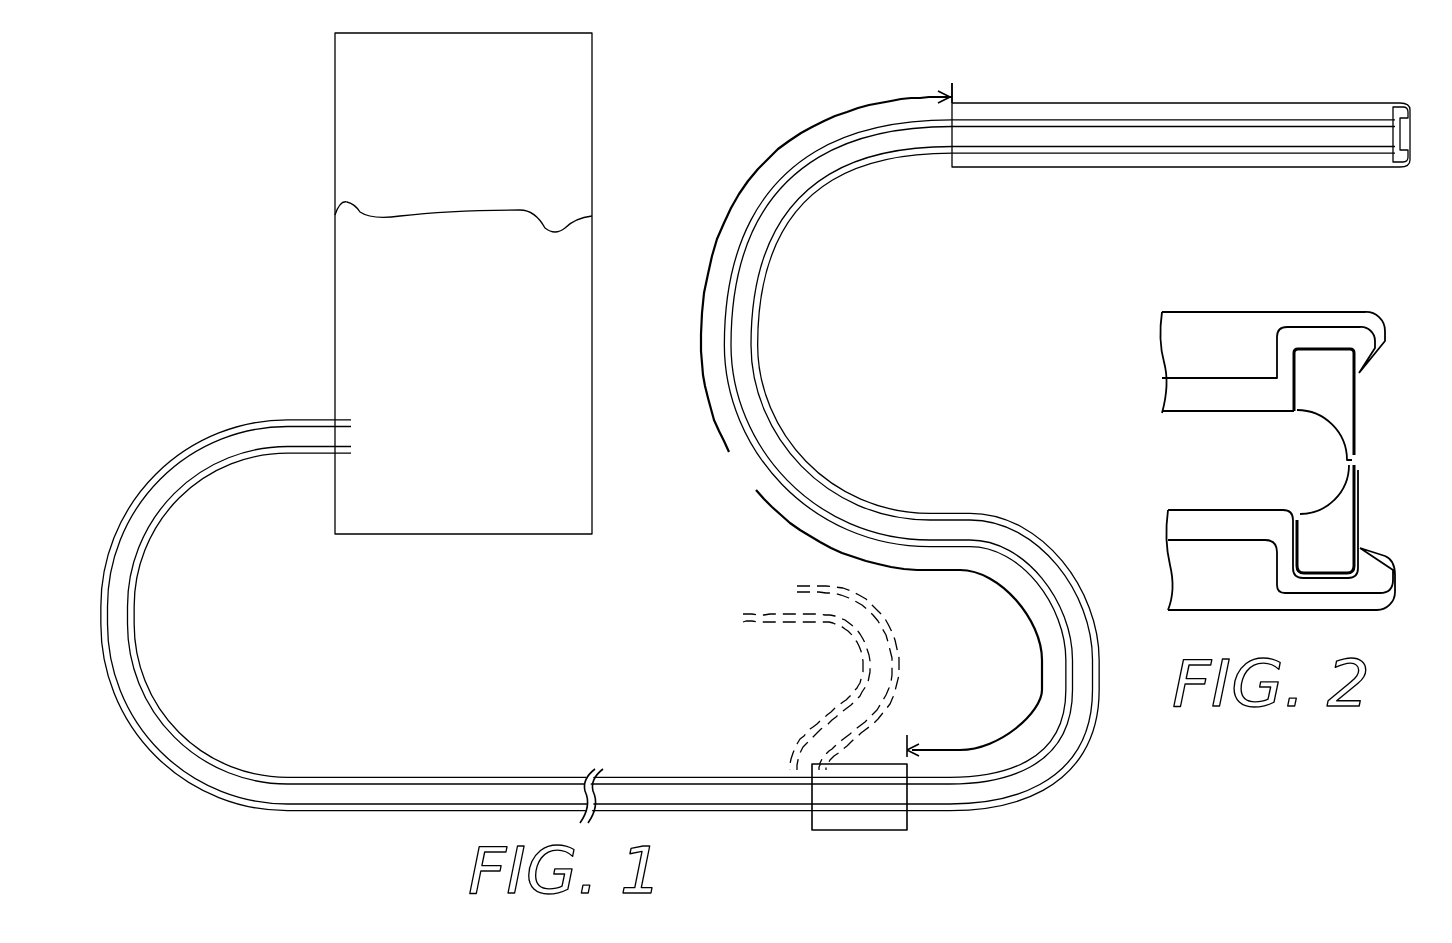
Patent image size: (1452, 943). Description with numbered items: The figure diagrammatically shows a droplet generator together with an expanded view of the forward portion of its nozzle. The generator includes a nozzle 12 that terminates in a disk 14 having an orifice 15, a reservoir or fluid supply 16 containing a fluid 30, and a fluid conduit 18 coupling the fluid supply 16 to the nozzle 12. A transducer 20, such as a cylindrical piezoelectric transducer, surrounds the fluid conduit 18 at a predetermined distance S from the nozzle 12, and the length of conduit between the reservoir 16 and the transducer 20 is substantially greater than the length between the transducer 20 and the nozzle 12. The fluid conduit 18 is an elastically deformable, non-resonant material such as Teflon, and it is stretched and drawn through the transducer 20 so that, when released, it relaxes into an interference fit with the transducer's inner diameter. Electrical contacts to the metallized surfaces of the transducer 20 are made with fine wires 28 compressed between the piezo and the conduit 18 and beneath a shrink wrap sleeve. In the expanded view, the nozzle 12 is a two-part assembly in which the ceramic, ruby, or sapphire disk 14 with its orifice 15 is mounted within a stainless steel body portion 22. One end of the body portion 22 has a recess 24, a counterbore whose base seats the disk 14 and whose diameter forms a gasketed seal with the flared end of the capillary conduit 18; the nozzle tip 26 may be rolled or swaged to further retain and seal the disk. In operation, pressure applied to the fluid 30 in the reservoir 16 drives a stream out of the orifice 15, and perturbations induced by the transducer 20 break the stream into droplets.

In FIG. 1, the nozzle 12 is at (1017, 83).
In FIG. 1, the disk 14 is at (1412, 112).
In FIG. 2, the disk 14 is at (1338, 378).
In FIG. 2, the orifice 15 is at (1376, 461).
In FIG. 1, the reservoir 16 is at (592, 130).
In FIG. 1, the fluid conduit 18 is at (793, 447).
In FIG. 1, the transducer 20 is at (868, 831).
In FIG. 1, the body portion 22 is at (1172, 106).
In FIG. 2, the body portion 22 is at (1247, 597).
In FIG. 2, the recess 24 is at (1384, 542).
In FIG. 2, the nozzle tip 26 is at (1387, 333).
In FIG. 1, the fine wires 28 is at (741, 631).
In FIG. 1, the fluid 30 is at (436, 387).